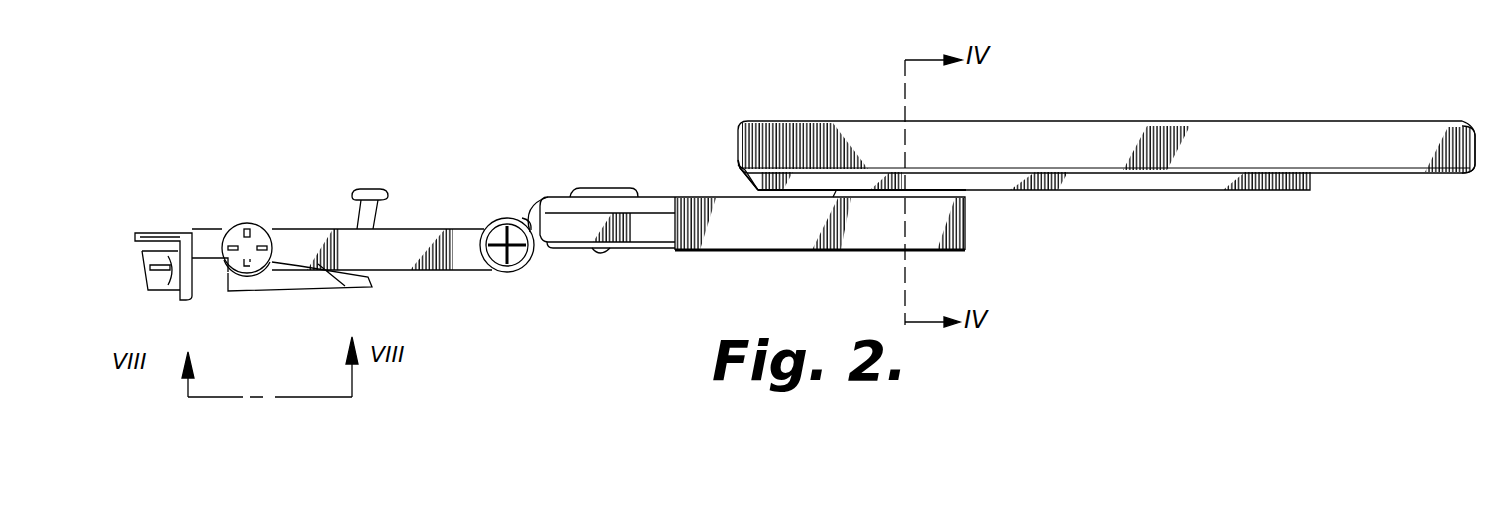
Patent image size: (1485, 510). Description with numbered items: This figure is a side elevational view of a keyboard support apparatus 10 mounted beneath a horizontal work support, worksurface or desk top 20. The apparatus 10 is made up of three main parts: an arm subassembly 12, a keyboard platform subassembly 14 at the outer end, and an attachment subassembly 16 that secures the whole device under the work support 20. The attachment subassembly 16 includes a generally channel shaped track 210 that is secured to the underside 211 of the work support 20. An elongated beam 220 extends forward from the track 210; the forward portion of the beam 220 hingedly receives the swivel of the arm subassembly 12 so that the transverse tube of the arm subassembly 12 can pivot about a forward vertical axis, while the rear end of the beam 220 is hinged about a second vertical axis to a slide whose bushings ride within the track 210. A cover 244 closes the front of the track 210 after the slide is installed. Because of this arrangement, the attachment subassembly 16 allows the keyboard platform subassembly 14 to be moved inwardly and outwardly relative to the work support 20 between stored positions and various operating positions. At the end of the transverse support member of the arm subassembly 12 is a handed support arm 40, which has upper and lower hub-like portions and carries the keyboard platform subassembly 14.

The keyboard support apparatus 10 is at (1033, 72).
The arm subassembly 12 is at (466, 162).
The keyboard platform subassembly 14 is at (194, 208).
The attachment subassembly 16 is at (716, 160).
The work support 20 is at (1355, 124).
The support arm 40 is at (292, 232).
The track 210 is at (1088, 183).
The underside of work support 211 is at (1396, 178).
The beam 220 is at (808, 236).
The cover 244 is at (745, 180).